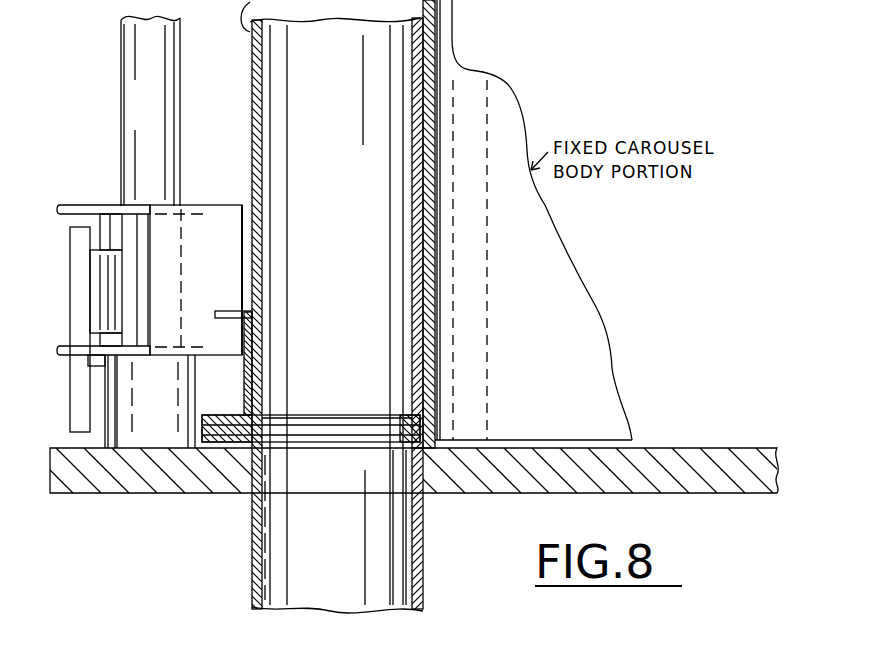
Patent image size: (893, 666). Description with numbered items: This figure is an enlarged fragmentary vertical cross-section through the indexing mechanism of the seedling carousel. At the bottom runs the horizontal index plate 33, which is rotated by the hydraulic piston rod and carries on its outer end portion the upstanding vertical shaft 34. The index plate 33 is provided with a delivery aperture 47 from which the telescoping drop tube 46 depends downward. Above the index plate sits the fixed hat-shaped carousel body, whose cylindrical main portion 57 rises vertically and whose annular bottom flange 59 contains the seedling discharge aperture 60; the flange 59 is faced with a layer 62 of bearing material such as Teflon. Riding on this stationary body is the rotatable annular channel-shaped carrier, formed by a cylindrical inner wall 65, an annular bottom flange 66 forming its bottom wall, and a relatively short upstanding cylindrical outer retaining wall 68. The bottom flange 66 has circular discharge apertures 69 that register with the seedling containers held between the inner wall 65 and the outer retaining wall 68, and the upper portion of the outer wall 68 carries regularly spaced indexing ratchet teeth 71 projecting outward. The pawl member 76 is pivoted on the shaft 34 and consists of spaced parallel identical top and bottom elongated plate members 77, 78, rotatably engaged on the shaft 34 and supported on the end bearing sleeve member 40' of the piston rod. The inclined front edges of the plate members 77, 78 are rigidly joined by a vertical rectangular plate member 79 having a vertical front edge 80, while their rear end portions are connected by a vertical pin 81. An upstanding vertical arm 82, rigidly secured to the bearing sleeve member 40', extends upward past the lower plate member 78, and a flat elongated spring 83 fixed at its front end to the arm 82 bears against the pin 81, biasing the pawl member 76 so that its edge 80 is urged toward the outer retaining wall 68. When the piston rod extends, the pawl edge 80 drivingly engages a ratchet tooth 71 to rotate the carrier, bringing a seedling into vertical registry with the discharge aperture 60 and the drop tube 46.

The index plate 33 is at (690, 448).
The upstanding vertical shaft 34 is at (134, 40).
The end bearing sleeve member 40' is at (150, 401).
The drop tube 46 is at (423, 530).
The delivery aperture 47 is at (417, 483).
The cylindrical main portion 57 is at (437, 380).
The annular bottom flange 59 is at (214, 444).
The seedling discharge aperture 60 is at (300, 445).
The layer of bearing material 62 is at (262, 422).
The cylindrical inner wall 65 is at (436, 203).
The annular bottom flange 66 is at (222, 416).
The outer retaining wall 68 is at (250, 364).
The circular discharge apertures 69 is at (352, 415).
The indexing ratchet teeth 71 is at (222, 311).
The pawl member 76 is at (221, 205).
The top elongated plate member 77 is at (70, 205).
The bottom elongated plate member 78 is at (62, 346).
The vertical rectangular plate member 79 is at (218, 252).
The vertical front edge 80 is at (243, 270).
The vertical pin 81 is at (92, 240).
The upstanding vertical arm 82 is at (70, 290).
The flat elongated spring 83 is at (112, 300).